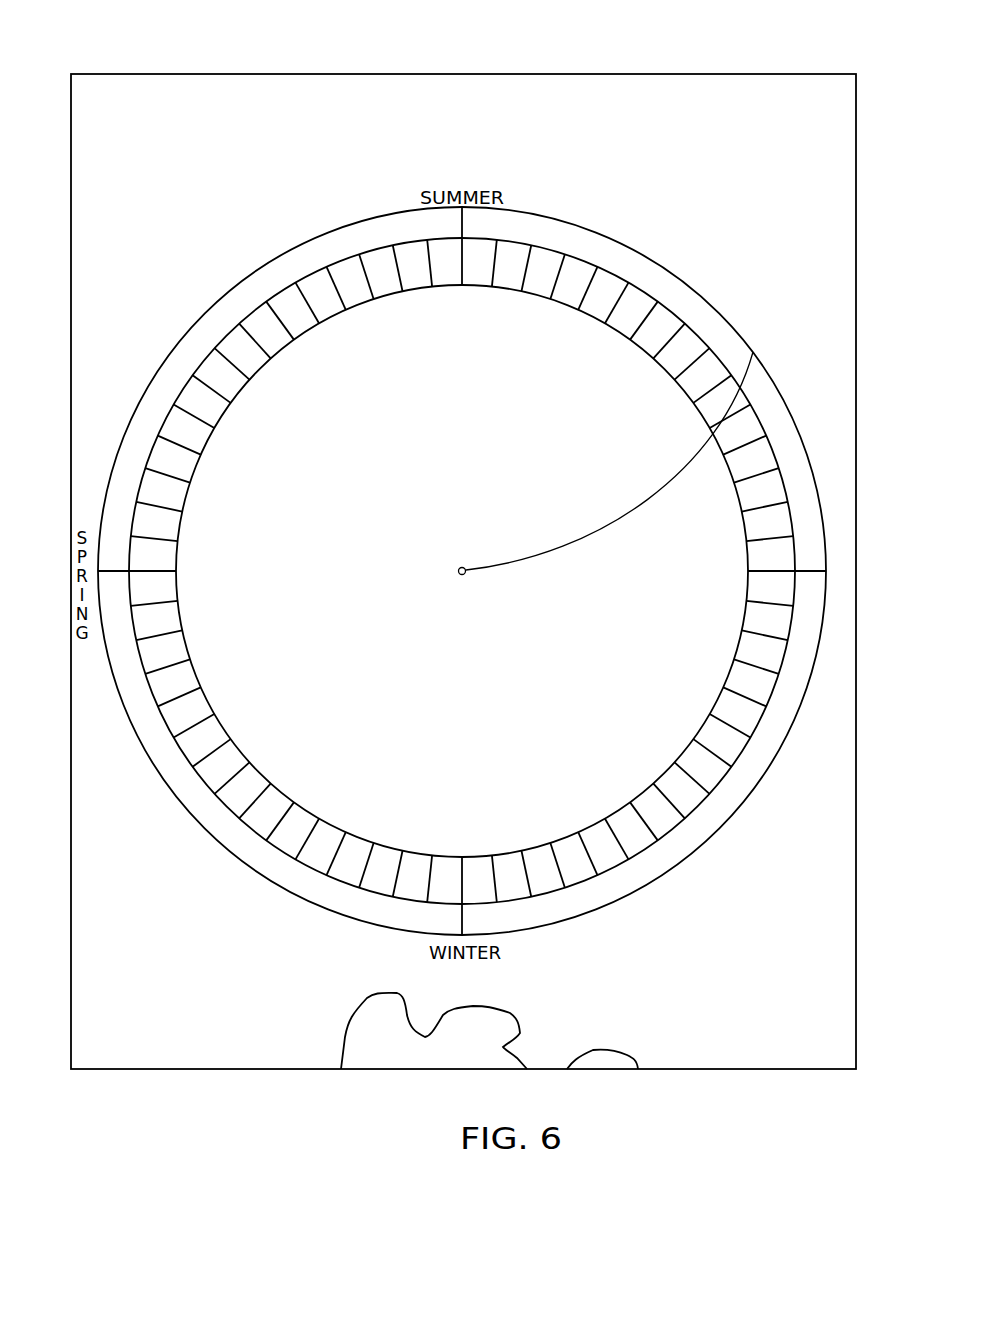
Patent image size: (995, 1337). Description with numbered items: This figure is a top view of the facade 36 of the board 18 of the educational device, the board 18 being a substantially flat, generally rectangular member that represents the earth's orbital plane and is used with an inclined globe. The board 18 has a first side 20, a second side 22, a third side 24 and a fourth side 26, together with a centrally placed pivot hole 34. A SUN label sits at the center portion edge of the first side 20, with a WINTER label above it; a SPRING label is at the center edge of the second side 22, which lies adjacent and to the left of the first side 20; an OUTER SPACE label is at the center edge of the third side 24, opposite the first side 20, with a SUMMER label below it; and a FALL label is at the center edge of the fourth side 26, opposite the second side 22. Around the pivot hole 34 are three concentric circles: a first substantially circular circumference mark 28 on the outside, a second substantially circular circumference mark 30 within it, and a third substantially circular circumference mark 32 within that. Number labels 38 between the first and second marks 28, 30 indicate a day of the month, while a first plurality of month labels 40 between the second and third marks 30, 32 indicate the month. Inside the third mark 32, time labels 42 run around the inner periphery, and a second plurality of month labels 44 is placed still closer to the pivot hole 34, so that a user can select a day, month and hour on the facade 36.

The board 18 is at (183, 1069).
The first side 20 is at (672, 1053).
The second side 22 is at (87, 733).
The third side 24 is at (570, 93).
The fourth side 26 is at (840, 672).
The first substantially circular circumference mark 28 is at (685, 858).
The second substantially circular circumference mark 30 is at (718, 826).
The third substantially circular circumference mark 32 is at (757, 772).
The pivot hole 34 is at (753, 352).
The facade 36 is at (275, 1002).
The number labels 38 is at (643, 883).
The first plurality of month labels 40 is at (688, 315).
The time labels 42 is at (598, 265).
The second plurality of month labels 44 is at (357, 372).